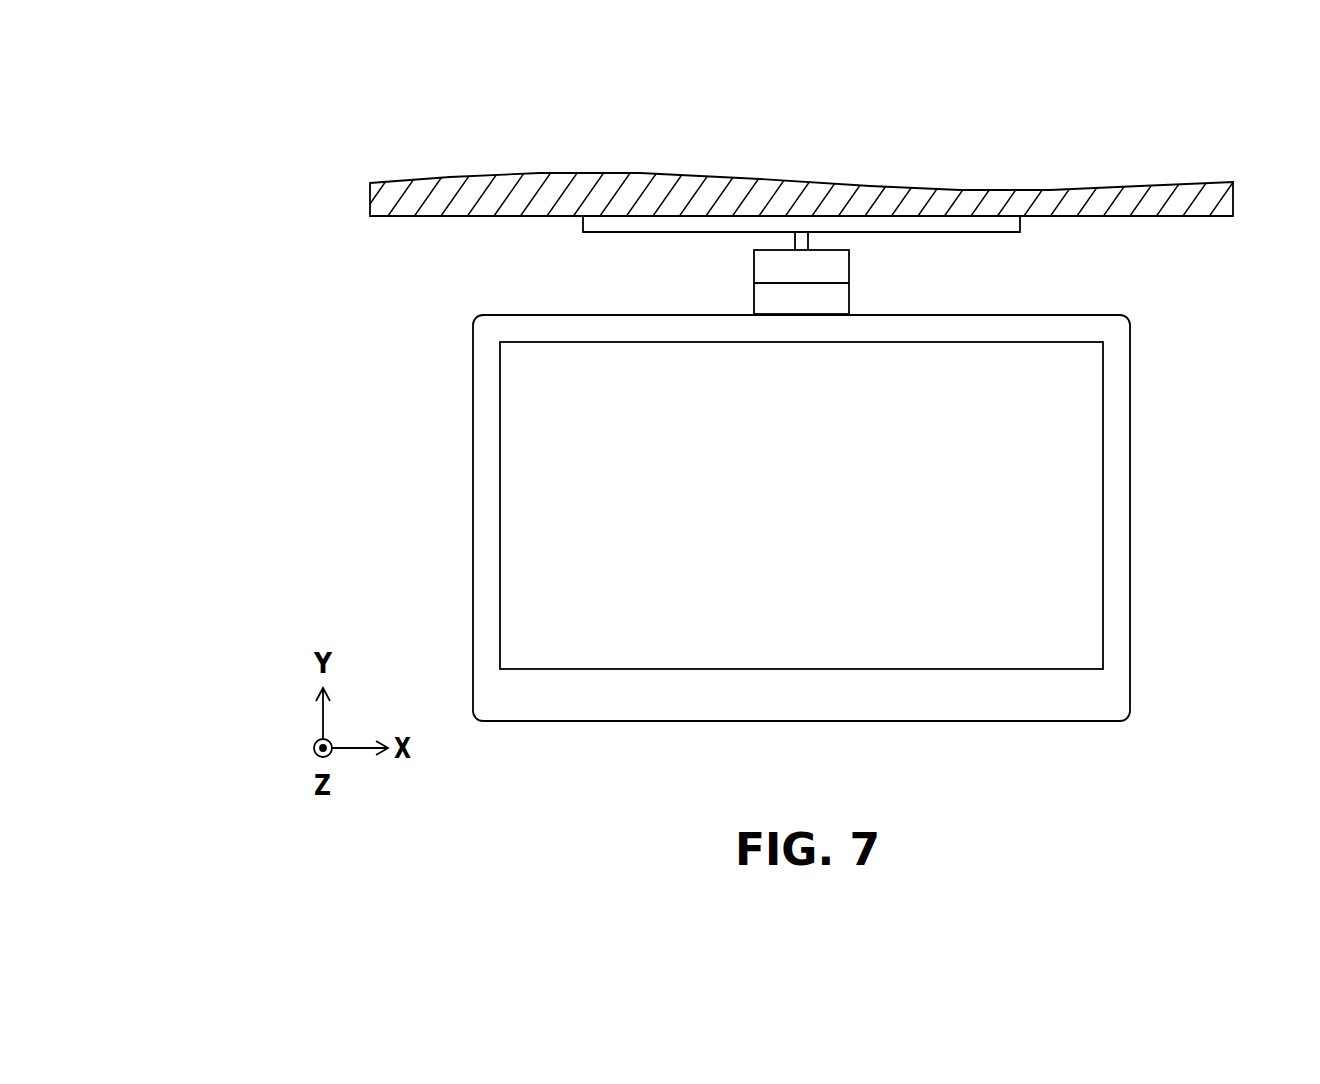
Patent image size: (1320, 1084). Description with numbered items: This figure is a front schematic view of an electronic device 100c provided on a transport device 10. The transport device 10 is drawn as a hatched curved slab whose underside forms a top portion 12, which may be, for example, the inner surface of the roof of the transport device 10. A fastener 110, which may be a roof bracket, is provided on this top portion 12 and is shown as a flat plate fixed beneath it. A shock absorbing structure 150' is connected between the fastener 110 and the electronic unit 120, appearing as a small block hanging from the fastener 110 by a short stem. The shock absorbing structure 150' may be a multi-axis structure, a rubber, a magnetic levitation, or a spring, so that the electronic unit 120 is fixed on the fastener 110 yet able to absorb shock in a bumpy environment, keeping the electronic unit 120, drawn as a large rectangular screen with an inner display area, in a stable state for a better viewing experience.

The transport device 10 is at (478, 192).
The top portion 12 is at (461, 216).
The fastener 110 is at (987, 224).
The shock absorbing structure 150' is at (857, 273).
The electronic unit 120 is at (1120, 527).
The electronic device 100c is at (865, 496).